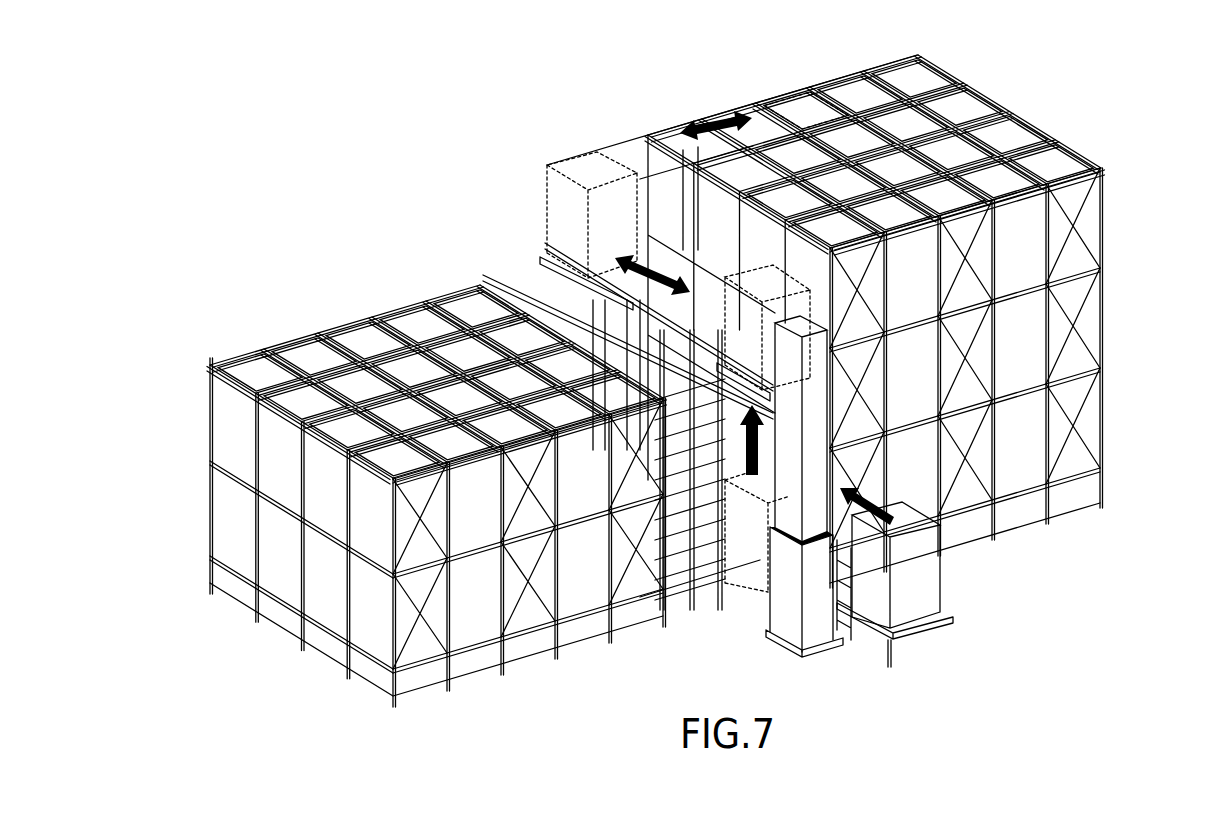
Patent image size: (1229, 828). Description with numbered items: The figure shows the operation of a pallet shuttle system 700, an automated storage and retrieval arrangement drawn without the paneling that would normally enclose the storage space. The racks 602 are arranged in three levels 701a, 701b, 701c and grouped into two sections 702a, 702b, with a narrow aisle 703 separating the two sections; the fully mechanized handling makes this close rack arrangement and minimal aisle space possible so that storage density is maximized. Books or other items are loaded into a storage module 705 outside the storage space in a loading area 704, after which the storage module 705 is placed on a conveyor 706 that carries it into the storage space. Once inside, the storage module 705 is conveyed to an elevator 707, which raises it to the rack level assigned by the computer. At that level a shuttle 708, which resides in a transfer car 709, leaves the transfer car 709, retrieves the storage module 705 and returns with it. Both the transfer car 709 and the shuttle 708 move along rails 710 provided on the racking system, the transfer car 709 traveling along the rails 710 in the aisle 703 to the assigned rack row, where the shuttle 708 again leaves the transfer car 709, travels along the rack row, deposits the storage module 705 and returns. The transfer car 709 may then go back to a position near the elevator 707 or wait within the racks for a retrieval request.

The pallet shuttle system 700 is at (272, 127).
The first rack section 702a is at (260, 320).
The second rack section 702b is at (632, 115).
The first rack level 701a is at (1108, 410).
The second rack level 701b is at (1108, 315).
The third rack level 701c is at (1107, 213).
The aisle 703 is at (482, 285).
The storage module 705 is at (922, 578).
The loading area 704 is at (950, 620).
The conveyor 706 is at (880, 633).
The elevator 707 is at (790, 595).
The shuttle 708 is at (545, 250).
The transfer car 709 is at (540, 258).
The rails 710 is at (520, 337).
The racks 602 is at (347, 673).